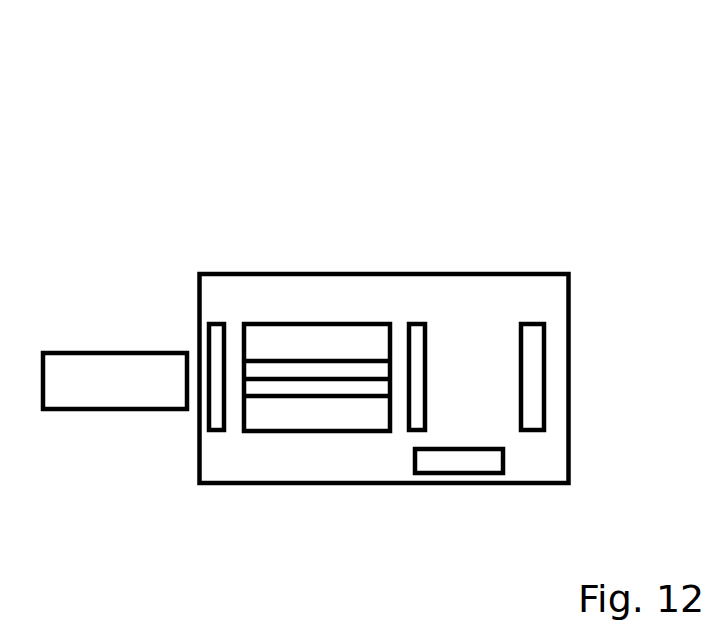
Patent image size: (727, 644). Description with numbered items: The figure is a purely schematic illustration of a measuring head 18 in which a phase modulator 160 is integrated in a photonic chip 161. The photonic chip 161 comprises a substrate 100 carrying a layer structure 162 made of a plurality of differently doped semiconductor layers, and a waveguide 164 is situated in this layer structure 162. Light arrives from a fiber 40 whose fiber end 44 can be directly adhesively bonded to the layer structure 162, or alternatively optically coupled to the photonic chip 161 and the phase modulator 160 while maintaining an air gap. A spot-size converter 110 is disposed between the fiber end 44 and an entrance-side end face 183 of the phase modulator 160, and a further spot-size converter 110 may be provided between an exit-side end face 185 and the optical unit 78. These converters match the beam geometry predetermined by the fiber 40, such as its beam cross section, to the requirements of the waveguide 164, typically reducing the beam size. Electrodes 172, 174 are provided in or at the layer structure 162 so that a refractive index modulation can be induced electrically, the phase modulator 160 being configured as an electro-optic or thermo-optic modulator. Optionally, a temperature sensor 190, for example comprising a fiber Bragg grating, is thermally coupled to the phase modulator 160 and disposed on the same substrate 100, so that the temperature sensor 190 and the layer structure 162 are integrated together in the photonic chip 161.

The measuring head 18 is at (498, 110).
The fiber 40 is at (72, 364).
The fiber end 44 is at (156, 364).
The optical unit 78 is at (538, 340).
The substrate 100 is at (493, 312).
The spot-size converter 110 is at (215, 330).
The phase modulator 160 is at (320, 290).
The photonic chip 161 is at (391, 190).
The layer structure 162 is at (263, 343).
The waveguide 164 is at (327, 380).
The electrode 172 is at (375, 395).
The electrode 174 is at (368, 357).
The entrance-side end face 183 is at (242, 412).
The exit-side end face 185 is at (399, 418).
The temperature sensor 190 is at (455, 475).